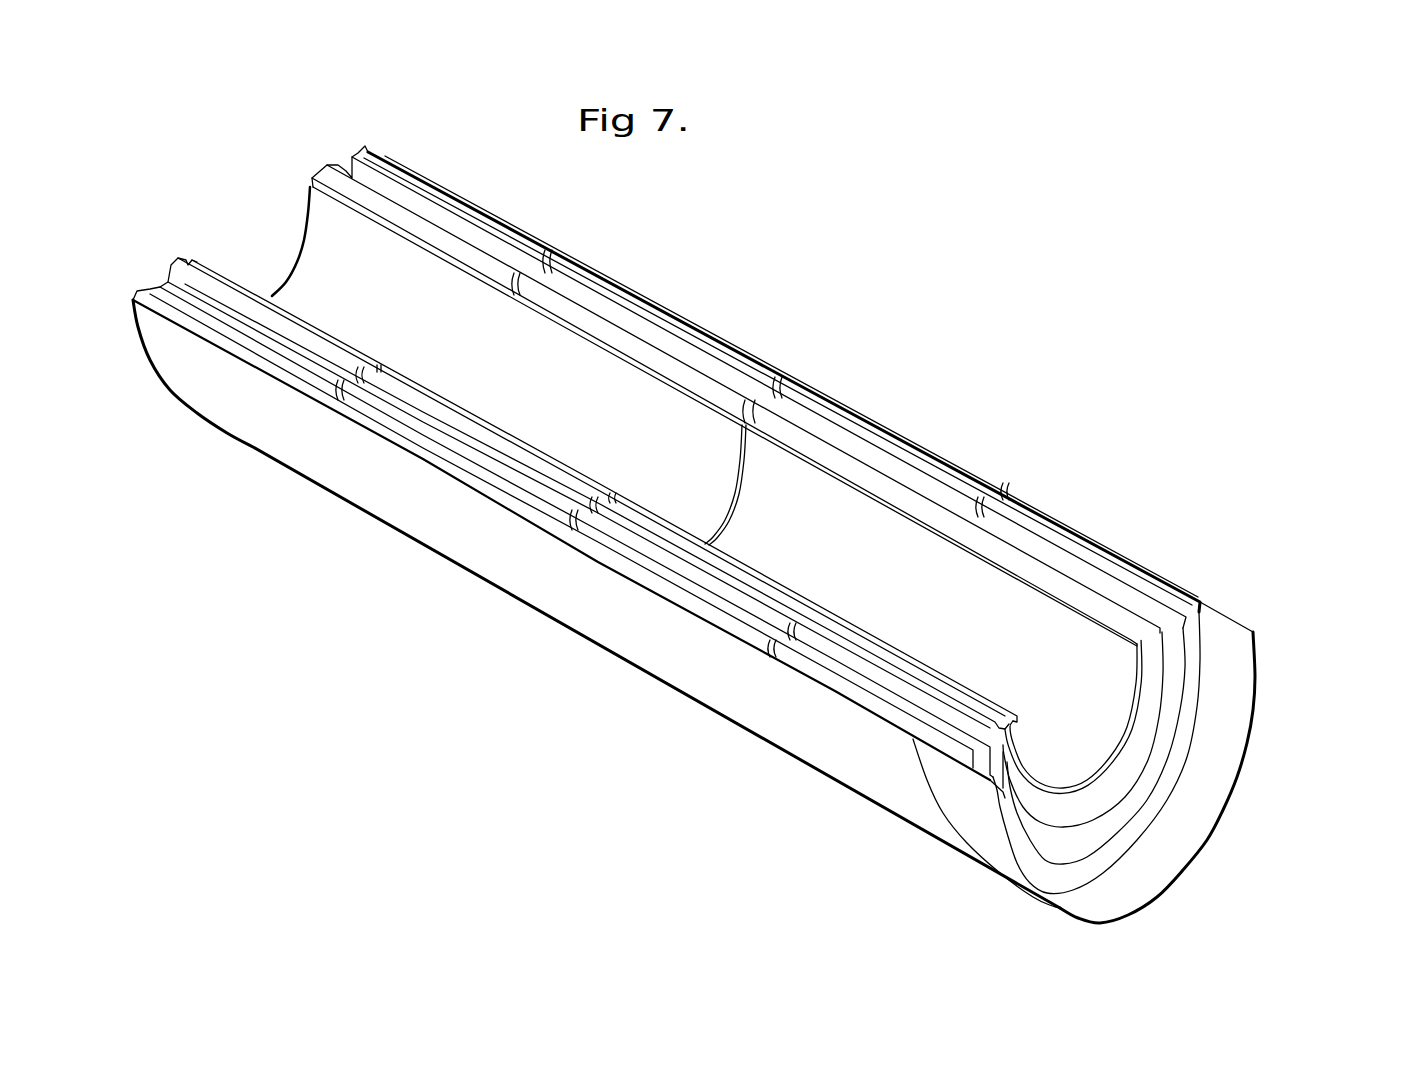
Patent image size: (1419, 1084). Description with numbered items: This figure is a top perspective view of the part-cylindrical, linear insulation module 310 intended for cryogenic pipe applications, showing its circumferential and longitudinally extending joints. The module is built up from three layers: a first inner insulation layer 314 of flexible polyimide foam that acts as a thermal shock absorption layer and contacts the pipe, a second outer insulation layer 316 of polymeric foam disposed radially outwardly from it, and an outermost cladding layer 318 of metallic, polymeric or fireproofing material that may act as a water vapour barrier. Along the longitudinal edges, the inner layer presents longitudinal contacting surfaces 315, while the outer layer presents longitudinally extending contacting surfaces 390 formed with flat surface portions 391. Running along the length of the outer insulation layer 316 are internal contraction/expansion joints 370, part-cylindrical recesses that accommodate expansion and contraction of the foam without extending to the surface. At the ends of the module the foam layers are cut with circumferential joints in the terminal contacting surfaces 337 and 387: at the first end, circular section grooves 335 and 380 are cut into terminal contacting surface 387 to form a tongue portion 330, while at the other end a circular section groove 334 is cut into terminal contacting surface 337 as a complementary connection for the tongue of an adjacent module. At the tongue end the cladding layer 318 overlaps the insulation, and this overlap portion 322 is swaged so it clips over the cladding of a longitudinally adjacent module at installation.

The insulation module 310 is at (887, 398).
The first inner insulation layer 314 is at (904, 578).
The longitudinal contacting surfaces 315 is at (805, 460).
The second outer insulation layer 316 is at (1057, 550).
The cladding layer 318 is at (1258, 652).
The overlap portion 322 is at (1200, 807).
The tongue portion 330 is at (1188, 660).
The circular section groove 334 is at (330, 166).
The circular section groove 335 is at (1202, 637).
The terminal contacting surface 337 is at (268, 278).
The contraction/expansion joint 370 is at (775, 383).
The circular section groove 380 is at (1023, 783).
The terminal contacting surface 387 is at (1196, 727).
The longitudinally extending contacting surfaces 390 is at (568, 295).
The flat surface portions 391 is at (1090, 552).